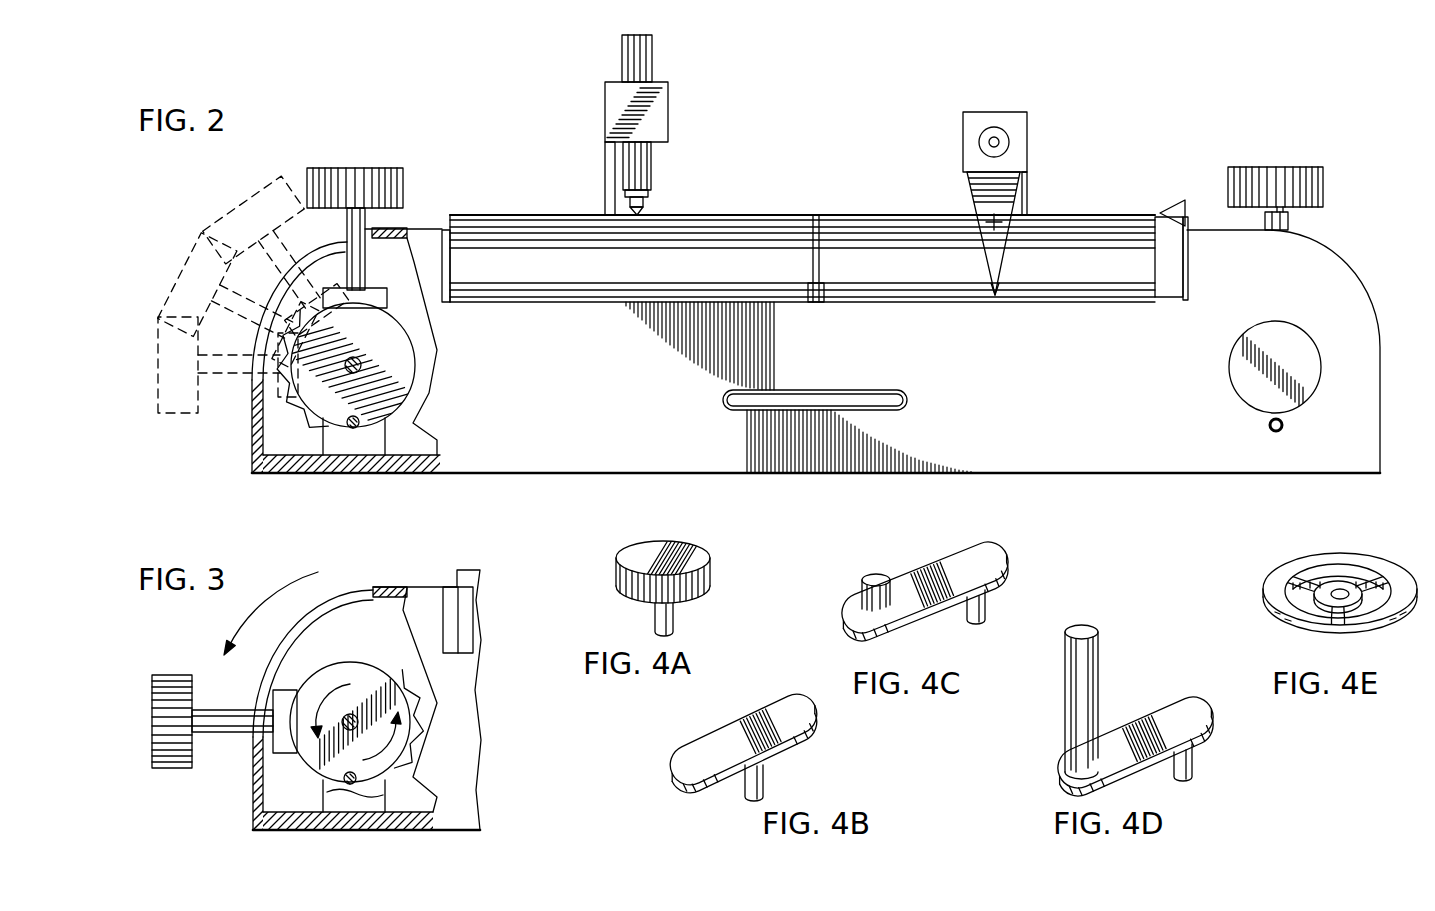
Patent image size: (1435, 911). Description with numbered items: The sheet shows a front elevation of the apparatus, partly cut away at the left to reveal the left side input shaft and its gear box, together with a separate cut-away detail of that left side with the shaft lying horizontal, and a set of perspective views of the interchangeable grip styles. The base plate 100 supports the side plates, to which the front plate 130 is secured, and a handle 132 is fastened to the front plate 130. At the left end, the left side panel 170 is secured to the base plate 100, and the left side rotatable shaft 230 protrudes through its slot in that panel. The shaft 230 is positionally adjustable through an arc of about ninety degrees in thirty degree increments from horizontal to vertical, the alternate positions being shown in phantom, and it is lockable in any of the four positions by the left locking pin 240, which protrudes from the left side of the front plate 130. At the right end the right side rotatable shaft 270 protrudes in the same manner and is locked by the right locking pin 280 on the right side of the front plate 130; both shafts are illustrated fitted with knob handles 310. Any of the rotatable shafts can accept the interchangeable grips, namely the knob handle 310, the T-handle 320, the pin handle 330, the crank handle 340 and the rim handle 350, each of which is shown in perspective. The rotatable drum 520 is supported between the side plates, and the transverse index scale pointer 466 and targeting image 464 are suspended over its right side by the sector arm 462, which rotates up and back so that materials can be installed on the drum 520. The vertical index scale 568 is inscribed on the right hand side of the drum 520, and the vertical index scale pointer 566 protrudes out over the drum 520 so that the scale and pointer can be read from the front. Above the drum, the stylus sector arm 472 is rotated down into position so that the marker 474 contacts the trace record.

In FIG. 2, the base plate 100 is at (405, 474).
In FIG. 2, the front plate 130 is at (1062, 445).
In FIG. 2, the handle 132 is at (896, 410).
In FIG. 2, the left side panel 170 is at (252, 440).
In FIG. 2, the left side rotatable shaft 230 is at (348, 234).
In FIG. 3, the left side rotatable shaft 230 is at (208, 733).
In FIG. 2, the left locking pin 240 is at (353, 430).
In FIG. 3, the left locking pin 240 is at (345, 788).
In FIG. 2, the right side rotatable shaft 270 is at (1290, 222).
In FIG. 2, the right locking pin 280 is at (1282, 430).
In FIG. 2, the knob handle 310 is at (306, 174).
In FIG. 3, the knob handle 310 is at (157, 770).
In FIG. 4A, the knob handle 310 is at (697, 598).
In FIG. 4B, the T-handle 320 is at (800, 733).
In FIG. 4C, the pin handle 330 is at (918, 626).
In FIG. 4D, the crank handle 340 is at (1100, 668).
In FIG. 4E, the rim handle 350 is at (1270, 580).
In FIG. 2, the sector arm 462 is at (1027, 192).
In FIG. 2, the targeting image 464 is at (978, 213).
In FIG. 2, the transverse index scale pointer 466 is at (990, 284).
In FIG. 2, the stylus sector arm 472 is at (606, 176).
In FIG. 2, the marker 474 is at (652, 172).
In FIG. 2, the rotatable drum 520 is at (532, 215).
In FIG. 2, the vertical index scale pointer 566 is at (1175, 232).
In FIG. 2, the vertical index scale 568 is at (1157, 268).